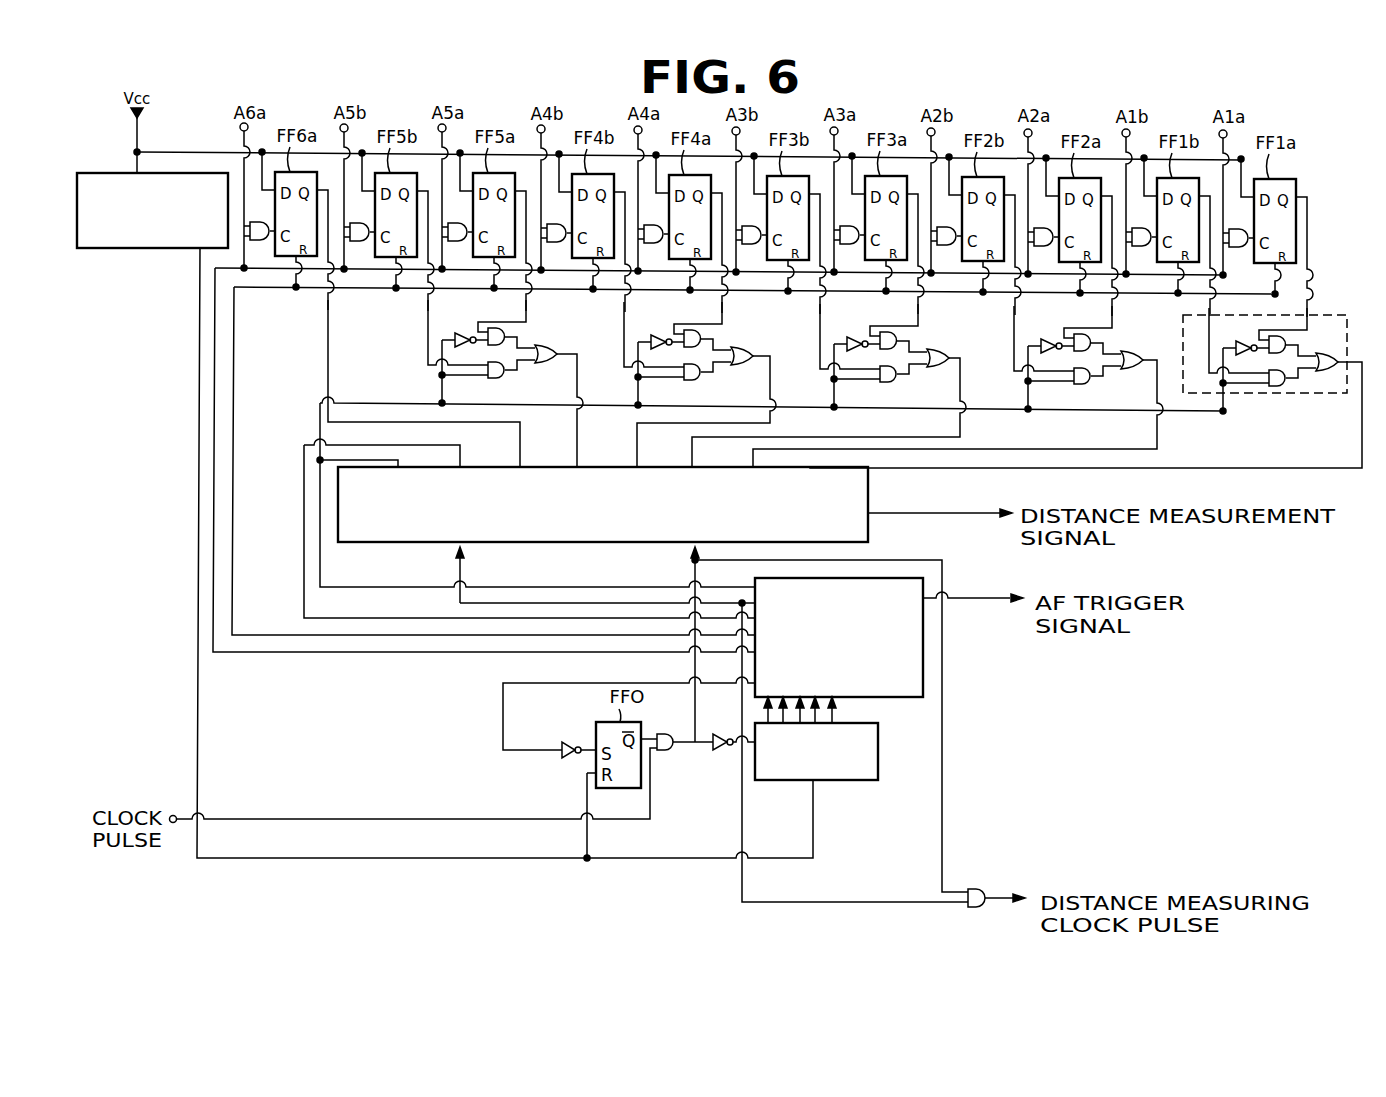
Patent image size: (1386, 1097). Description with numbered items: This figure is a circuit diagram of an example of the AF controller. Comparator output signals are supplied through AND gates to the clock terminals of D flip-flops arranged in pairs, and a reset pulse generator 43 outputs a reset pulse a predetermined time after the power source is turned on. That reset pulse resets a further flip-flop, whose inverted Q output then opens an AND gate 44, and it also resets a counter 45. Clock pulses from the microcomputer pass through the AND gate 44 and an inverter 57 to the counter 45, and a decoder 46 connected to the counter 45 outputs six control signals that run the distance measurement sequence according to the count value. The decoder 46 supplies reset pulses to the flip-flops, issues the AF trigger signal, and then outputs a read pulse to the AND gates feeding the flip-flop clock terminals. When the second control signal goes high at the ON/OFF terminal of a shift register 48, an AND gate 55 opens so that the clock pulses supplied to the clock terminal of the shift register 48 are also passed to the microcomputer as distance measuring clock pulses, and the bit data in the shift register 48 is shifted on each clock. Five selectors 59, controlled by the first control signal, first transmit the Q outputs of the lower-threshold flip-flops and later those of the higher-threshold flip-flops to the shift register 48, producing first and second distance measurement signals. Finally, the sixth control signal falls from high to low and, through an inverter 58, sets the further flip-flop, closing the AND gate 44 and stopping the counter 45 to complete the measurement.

The reset pulse generator 43 is at (147, 250).
The AND gate 44 is at (667, 753).
The counter 45 is at (822, 781).
The decoder 46 is at (900, 698).
The shift register 48 is at (551, 467).
The AND gate 55 is at (975, 887).
The inverter 57 is at (722, 752).
The inverter 58 is at (567, 762).
The selectors 59 is at (1275, 395).